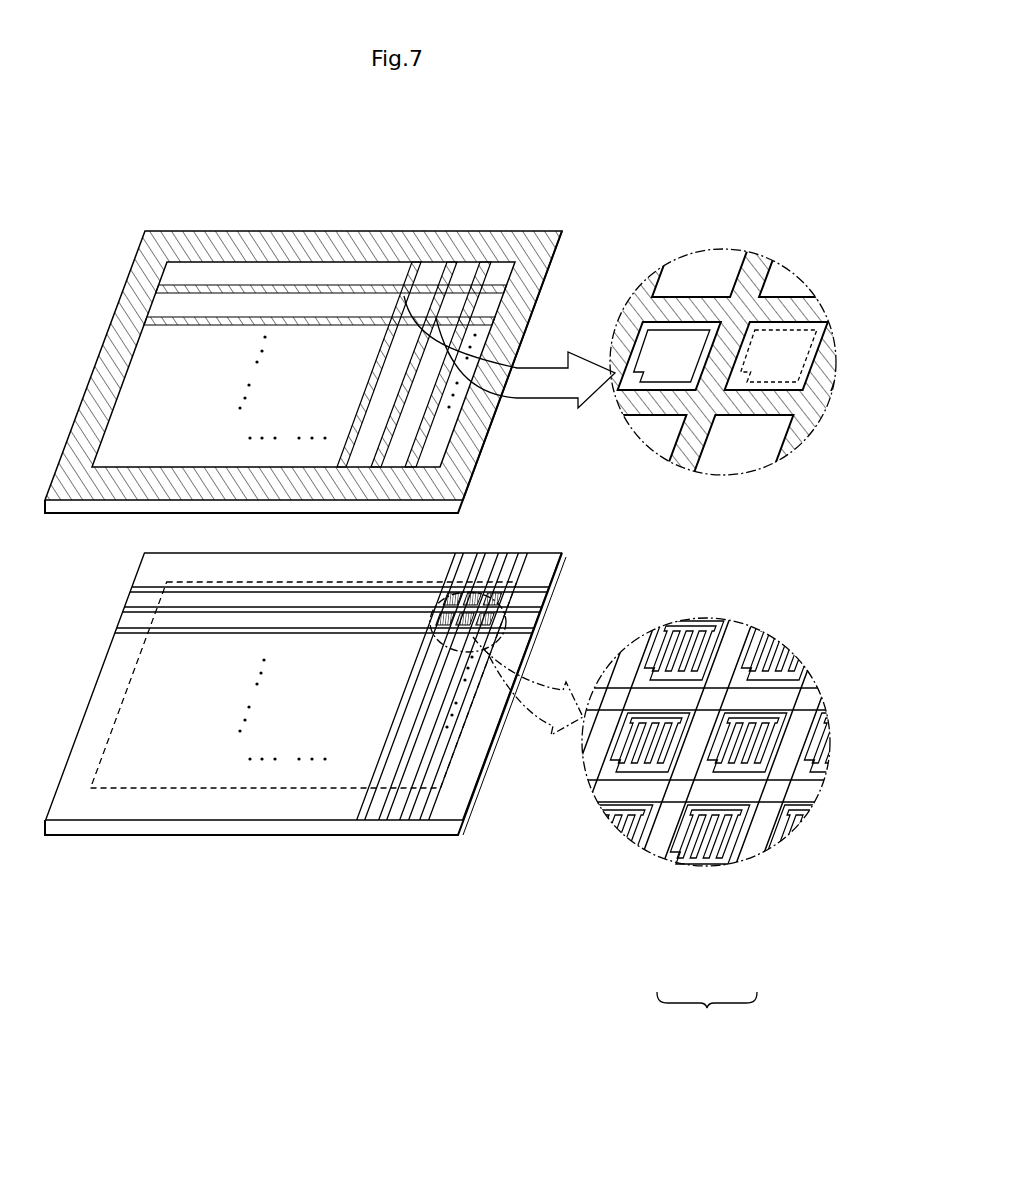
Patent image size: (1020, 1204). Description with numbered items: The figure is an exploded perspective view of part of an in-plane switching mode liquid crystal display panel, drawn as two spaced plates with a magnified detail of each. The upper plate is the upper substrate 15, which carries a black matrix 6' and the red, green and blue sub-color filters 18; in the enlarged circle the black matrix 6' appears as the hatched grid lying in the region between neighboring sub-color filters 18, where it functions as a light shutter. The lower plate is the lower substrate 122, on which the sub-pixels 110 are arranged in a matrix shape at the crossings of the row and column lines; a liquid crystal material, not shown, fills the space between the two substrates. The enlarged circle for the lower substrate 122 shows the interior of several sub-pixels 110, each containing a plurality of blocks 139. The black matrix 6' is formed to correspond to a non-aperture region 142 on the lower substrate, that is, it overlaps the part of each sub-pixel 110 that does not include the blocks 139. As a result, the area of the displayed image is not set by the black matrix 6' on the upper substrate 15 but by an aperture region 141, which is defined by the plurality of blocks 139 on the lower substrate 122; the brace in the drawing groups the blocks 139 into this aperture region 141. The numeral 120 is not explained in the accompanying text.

The upper substrate 15 is at (95, 314).
The black matrix 6' is at (539, 333).
The sub-color filters 18 is at (690, 337).
The color filter layer 120 is at (437, 443).
The lower substrate 122 is at (88, 665).
The sub-pixels 110 is at (427, 630).
The non-aperture region 142 is at (668, 862).
The blocks 139 is at (680, 858).
The aperture region 141 is at (707, 1013).